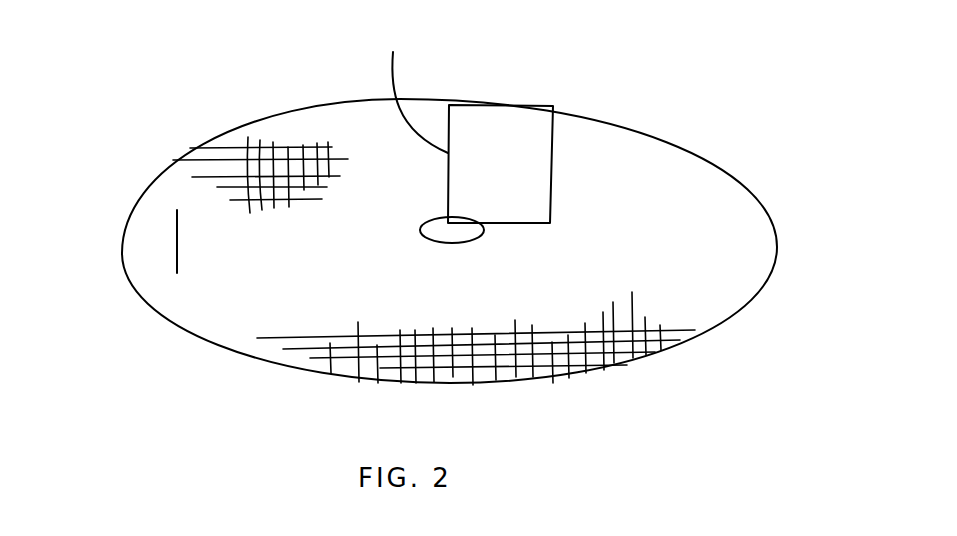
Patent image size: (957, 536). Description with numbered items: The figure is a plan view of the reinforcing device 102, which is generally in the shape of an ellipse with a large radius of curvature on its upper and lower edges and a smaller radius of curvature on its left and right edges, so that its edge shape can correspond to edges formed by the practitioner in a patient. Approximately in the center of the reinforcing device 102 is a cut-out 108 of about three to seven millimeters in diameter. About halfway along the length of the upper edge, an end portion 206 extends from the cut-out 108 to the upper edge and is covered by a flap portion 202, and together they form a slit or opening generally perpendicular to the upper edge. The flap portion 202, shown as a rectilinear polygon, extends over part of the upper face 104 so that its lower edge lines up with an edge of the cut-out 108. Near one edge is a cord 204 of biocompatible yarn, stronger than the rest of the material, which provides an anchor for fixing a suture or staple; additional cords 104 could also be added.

The reinforcing device 102 is at (702, 117).
The upper face 104 is at (738, 254).
The cut-out 108 is at (440, 246).
The flap portion 202 is at (512, 100).
The cord 204 is at (175, 242).
The end portion 206 is at (404, 89).